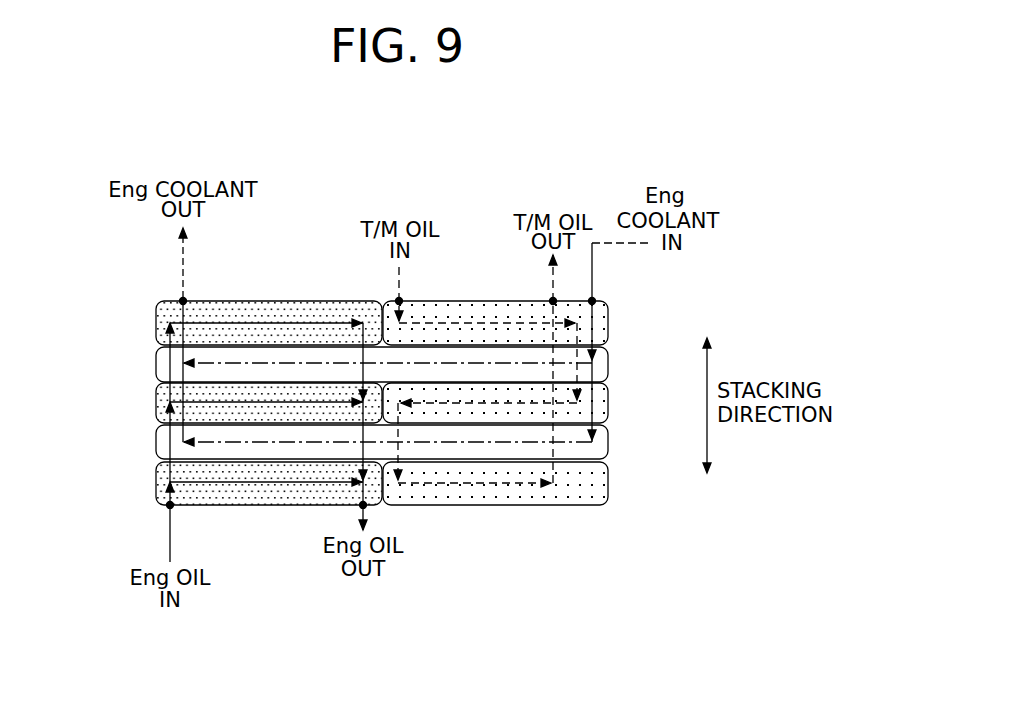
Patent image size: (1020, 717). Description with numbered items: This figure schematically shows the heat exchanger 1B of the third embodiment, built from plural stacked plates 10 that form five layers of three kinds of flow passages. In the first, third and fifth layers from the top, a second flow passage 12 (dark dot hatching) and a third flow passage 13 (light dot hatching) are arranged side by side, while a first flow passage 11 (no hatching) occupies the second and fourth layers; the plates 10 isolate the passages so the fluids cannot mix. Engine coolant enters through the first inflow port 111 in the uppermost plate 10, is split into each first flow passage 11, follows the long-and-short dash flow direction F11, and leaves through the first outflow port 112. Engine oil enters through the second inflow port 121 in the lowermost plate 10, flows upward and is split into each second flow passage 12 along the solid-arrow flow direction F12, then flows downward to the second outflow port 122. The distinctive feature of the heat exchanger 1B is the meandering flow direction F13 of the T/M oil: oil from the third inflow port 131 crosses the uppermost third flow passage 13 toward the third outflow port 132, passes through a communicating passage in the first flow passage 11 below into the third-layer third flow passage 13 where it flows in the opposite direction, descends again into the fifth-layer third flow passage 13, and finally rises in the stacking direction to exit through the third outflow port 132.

The heat exchanger 1B is at (668, 128).
The plate 10 is at (295, 347).
The first flow passage 11 is at (156, 360).
The second flow passage 12 is at (156, 322).
The third flow passage 13 is at (608, 325).
The first inflow port 111 is at (592, 301).
The first outflow port 112 is at (183, 301).
The second inflow port 121 is at (170, 505).
The second outflow port 122 is at (363, 505).
The third inflow port 131 is at (399, 301).
The third outflow port 132 is at (553, 301).
The flow direction of the engine coolant F11 is at (237, 363).
The flow direction of the engine oil F12 is at (261, 483).
The flow direction of the T/M oil F13 is at (536, 484).